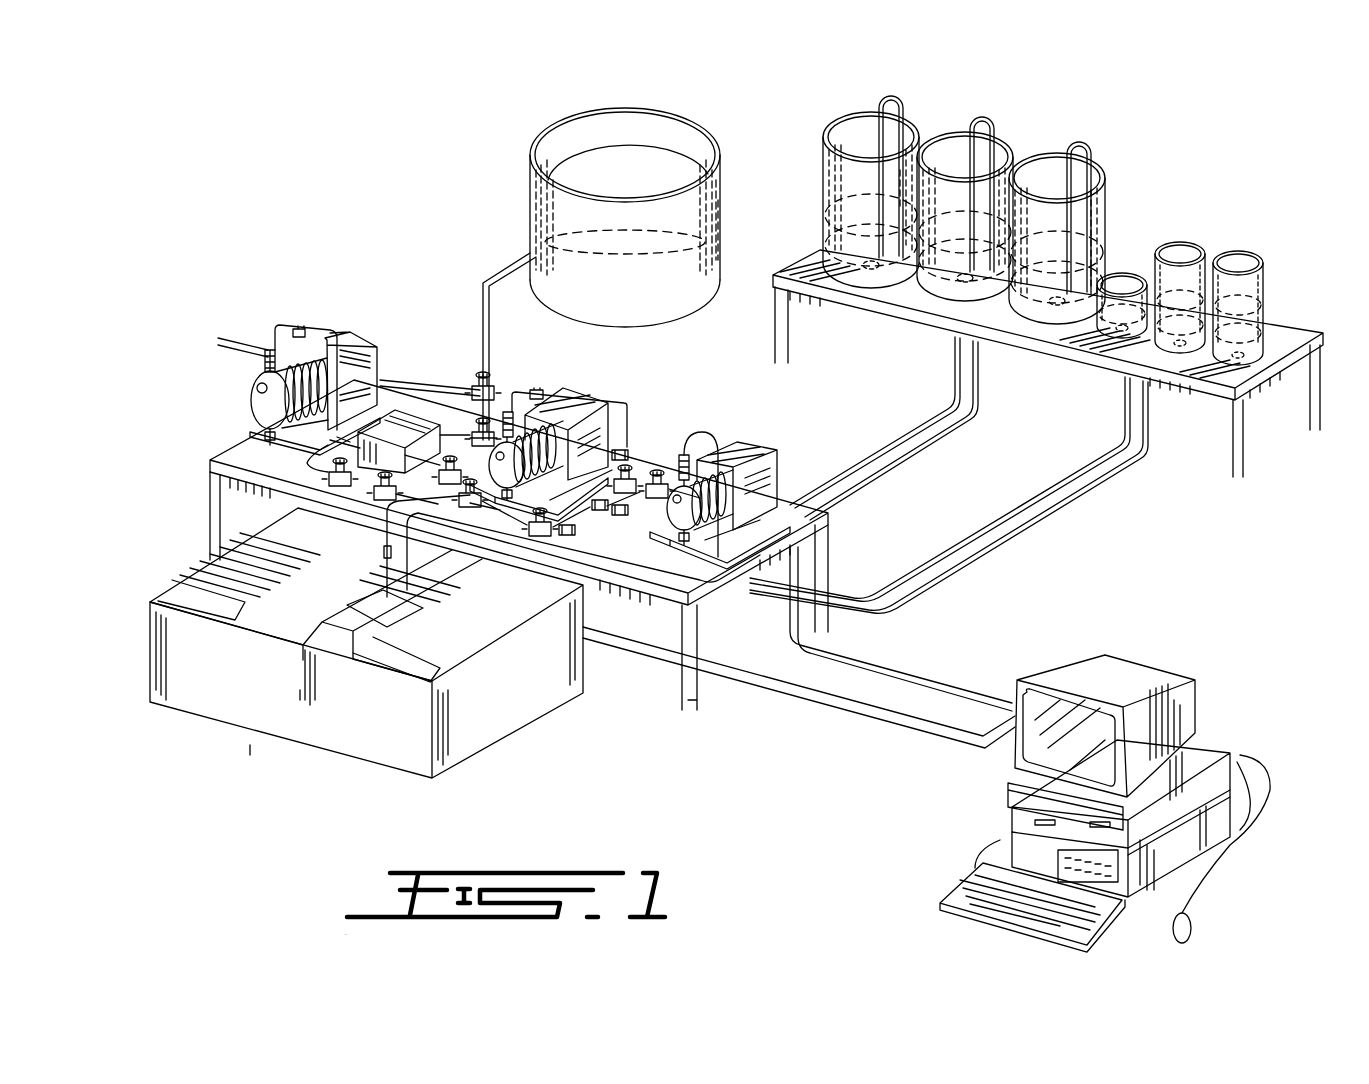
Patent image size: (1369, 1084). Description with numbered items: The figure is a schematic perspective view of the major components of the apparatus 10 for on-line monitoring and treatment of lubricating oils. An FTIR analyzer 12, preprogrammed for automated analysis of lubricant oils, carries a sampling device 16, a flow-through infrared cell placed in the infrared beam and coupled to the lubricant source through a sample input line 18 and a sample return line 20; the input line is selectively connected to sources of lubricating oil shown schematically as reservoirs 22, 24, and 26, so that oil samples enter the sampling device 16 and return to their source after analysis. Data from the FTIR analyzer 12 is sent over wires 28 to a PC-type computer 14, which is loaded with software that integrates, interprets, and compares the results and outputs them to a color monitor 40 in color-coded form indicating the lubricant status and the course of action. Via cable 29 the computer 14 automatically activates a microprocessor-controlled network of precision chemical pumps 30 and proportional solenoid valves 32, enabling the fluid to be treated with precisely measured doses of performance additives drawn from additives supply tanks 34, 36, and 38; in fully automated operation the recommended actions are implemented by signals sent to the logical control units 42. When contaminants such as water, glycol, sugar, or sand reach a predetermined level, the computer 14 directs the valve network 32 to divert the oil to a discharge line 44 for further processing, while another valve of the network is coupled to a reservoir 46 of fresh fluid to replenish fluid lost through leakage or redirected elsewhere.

The apparatus 10 is at (268, 182).
The FTIR analyzer 12 is at (252, 697).
The PC-type computer 14 is at (1220, 772).
The sampling device 16 is at (397, 612).
The sample input line 18 is at (383, 537).
The sample return line 20 is at (404, 573).
The reservoir 22 is at (903, 133).
The reservoir 24 is at (993, 157).
The reservoir 26 is at (1087, 178).
The wires 28 is at (898, 710).
The cable 29 is at (933, 683).
The precision chemical pumps 30 is at (363, 355).
The proportional solenoid valves 32 is at (489, 393).
The additives supply tank 34 is at (1122, 280).
The additives supply tank 36 is at (1185, 252).
The additives supply tank 38 is at (1243, 262).
The color monitor 40 is at (1170, 677).
The logical control units 42 is at (407, 422).
The discharge line 44 is at (245, 340).
The reservoir 46 is at (543, 200).